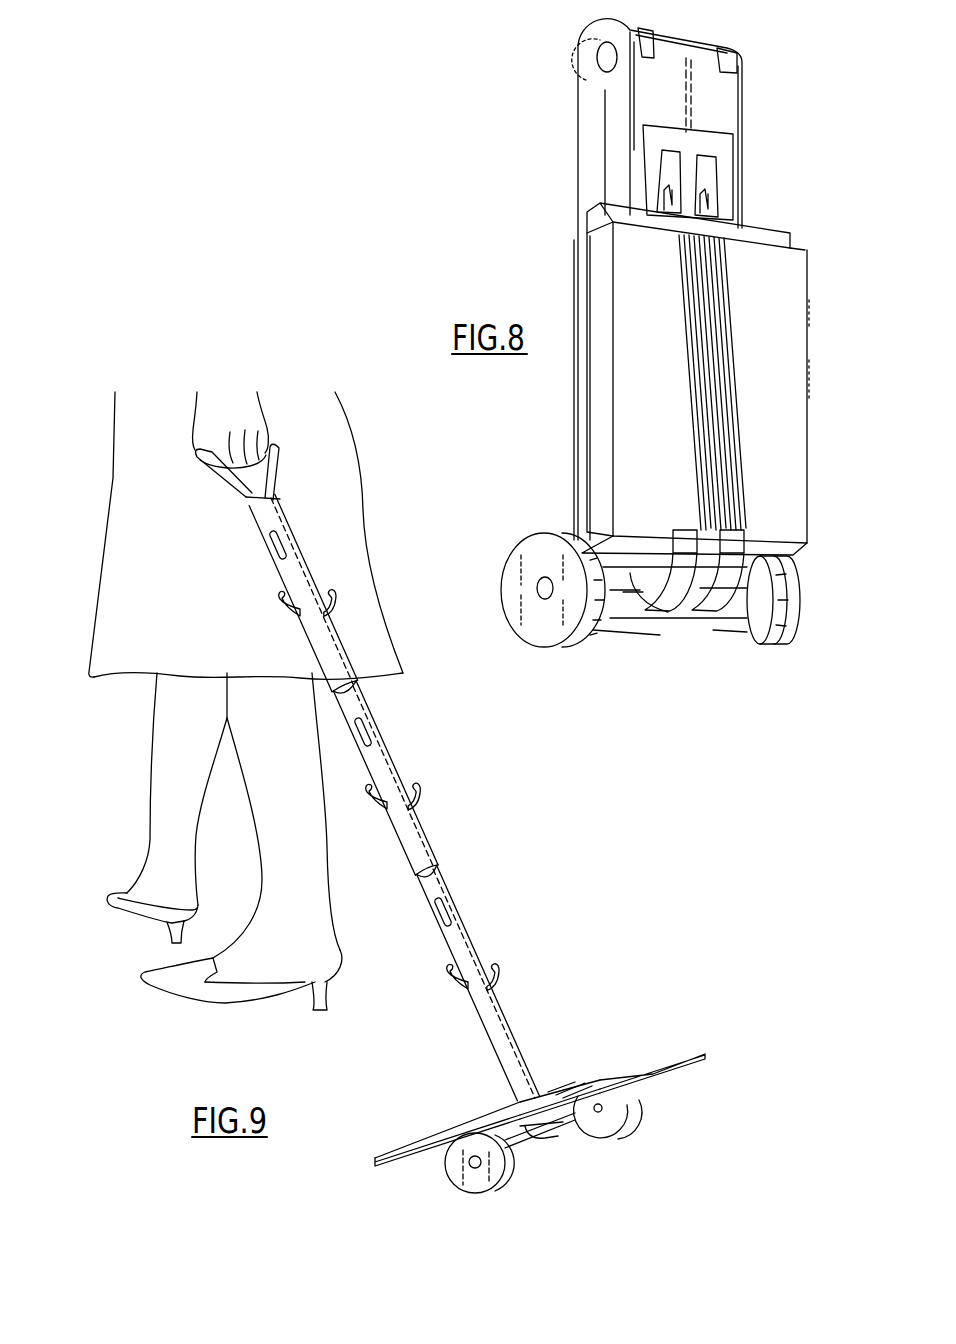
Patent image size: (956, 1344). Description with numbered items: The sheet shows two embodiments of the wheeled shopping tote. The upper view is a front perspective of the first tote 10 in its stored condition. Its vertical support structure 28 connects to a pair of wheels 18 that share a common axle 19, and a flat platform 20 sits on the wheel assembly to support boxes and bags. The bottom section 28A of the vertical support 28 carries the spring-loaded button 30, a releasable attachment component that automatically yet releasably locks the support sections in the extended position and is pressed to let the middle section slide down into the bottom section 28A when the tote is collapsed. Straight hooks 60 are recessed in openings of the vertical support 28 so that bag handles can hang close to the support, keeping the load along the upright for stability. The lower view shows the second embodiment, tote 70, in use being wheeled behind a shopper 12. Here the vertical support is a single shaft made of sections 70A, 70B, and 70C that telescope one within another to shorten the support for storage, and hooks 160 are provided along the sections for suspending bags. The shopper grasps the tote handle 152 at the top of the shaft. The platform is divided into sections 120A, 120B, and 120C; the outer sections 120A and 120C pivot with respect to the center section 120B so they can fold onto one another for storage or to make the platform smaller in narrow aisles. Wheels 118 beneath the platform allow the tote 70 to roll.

In FIG. 8, the tote 10 is at (800, 120).
In FIG. 9, the shopper 12 is at (92, 508).
In FIG. 8, the wheels 18 is at (550, 637).
In FIG. 8, the common axle 19 is at (537, 587).
In FIG. 8, the platform 20 is at (783, 365).
In FIG. 8, the vertical support structure 28 is at (578, 255).
In FIG. 8, the bottom section 28A is at (588, 95).
In FIG. 8, the spring-loaded button 30 is at (600, 50).
In FIG. 8, the hooks 60 is at (668, 198).
In FIG. 9, the tote 70 is at (472, 810).
In FIG. 9, the section 70A is at (477, 948).
In FIG. 9, the section 70B is at (396, 764).
In FIG. 9, the section 70C is at (304, 570).
In FIG. 9, the platform wheel 118 is at (602, 1137).
In FIG. 9, the platform section 120A is at (455, 1135).
In FIG. 9, the center section 120B is at (550, 1098).
In FIG. 9, the platform section 120C is at (655, 1070).
In FIG. 9, the tote handle 152 is at (279, 457).
In FIG. 9, the hooks 160 is at (298, 626).